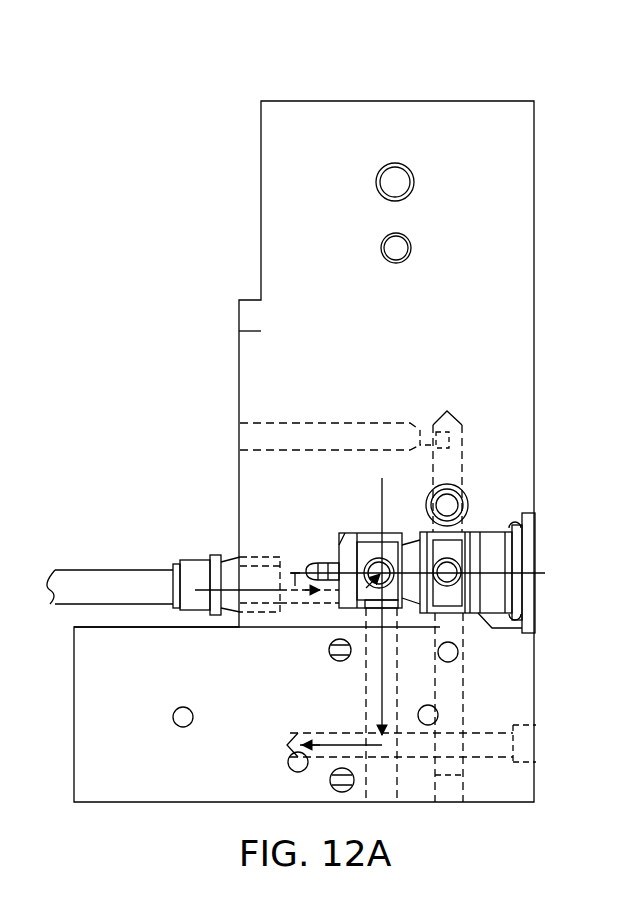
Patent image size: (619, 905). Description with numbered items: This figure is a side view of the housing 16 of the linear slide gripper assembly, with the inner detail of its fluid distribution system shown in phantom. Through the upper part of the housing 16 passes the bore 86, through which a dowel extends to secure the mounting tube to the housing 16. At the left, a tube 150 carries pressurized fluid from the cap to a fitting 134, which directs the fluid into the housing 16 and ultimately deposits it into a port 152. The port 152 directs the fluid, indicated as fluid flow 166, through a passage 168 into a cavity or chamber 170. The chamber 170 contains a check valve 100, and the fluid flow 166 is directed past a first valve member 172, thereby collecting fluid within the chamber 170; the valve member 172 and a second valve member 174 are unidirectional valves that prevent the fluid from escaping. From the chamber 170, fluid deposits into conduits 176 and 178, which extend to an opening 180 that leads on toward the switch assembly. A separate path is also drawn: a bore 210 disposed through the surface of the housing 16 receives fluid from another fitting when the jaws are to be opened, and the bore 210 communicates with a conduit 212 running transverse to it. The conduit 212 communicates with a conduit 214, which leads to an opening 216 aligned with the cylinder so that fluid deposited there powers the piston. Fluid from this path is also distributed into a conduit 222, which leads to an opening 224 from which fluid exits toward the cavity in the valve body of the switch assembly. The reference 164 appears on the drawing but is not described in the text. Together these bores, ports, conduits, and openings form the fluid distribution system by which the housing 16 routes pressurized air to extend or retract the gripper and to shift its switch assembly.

The housing 16 is at (335, 415).
The bore 86 is at (414, 172).
The manifold block 164 is at (522, 408).
The opening 216 is at (240, 438).
The conduit 214 is at (376, 424).
The conduit 212 is at (462, 430).
The tube 150 is at (100, 576).
The port fitting 134 is at (191, 561).
The port 152 is at (246, 578).
The fluid flow 166 is at (230, 587).
The passage 168 is at (296, 568).
The chamber 170 is at (372, 530).
The first valve member 172 is at (346, 544).
The valve member 174 is at (392, 541).
The bore 210 is at (470, 520).
The check valve 100 is at (544, 571).
The conduit 176 is at (366, 668).
The opening 224 is at (458, 651).
The conduit 222 is at (465, 703).
The conduit 178 is at (300, 737).
The opening 180 is at (293, 770).